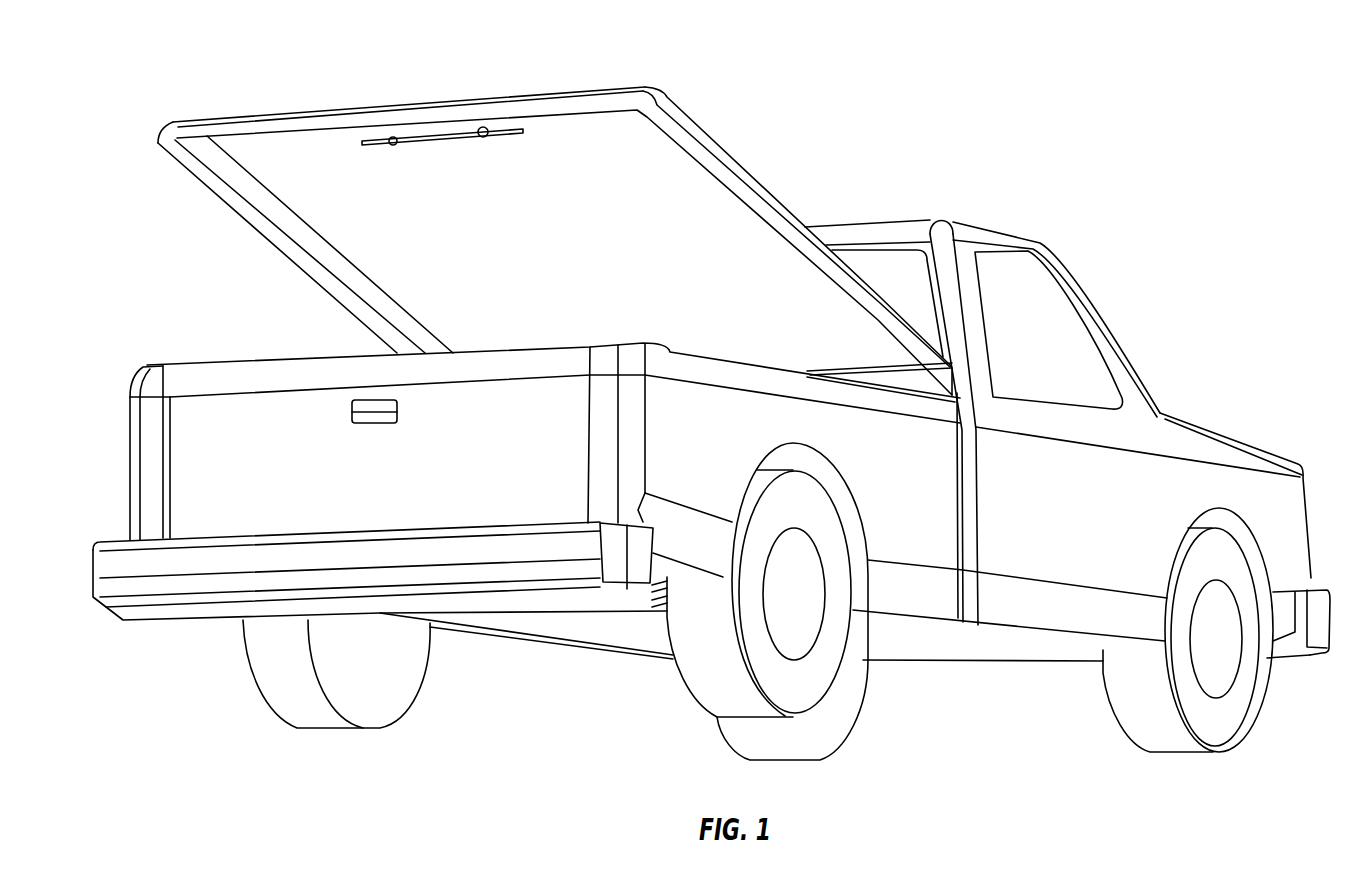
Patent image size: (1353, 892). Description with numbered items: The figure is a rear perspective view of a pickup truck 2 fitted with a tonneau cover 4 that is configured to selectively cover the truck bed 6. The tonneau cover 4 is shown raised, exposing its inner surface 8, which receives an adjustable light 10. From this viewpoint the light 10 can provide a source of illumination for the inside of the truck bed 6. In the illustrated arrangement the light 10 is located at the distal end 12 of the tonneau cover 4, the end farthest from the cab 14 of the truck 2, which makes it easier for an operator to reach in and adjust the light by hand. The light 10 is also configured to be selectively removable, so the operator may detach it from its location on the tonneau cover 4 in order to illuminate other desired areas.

The pickup truck 2 is at (1090, 307).
The tonneau cover 4 is at (575, 228).
The truck bed 6 is at (535, 348).
The inner surface 8 is at (537, 248).
The adjustable light 10 is at (445, 132).
The distal end 12 is at (255, 112).
The cab 14 is at (893, 220).